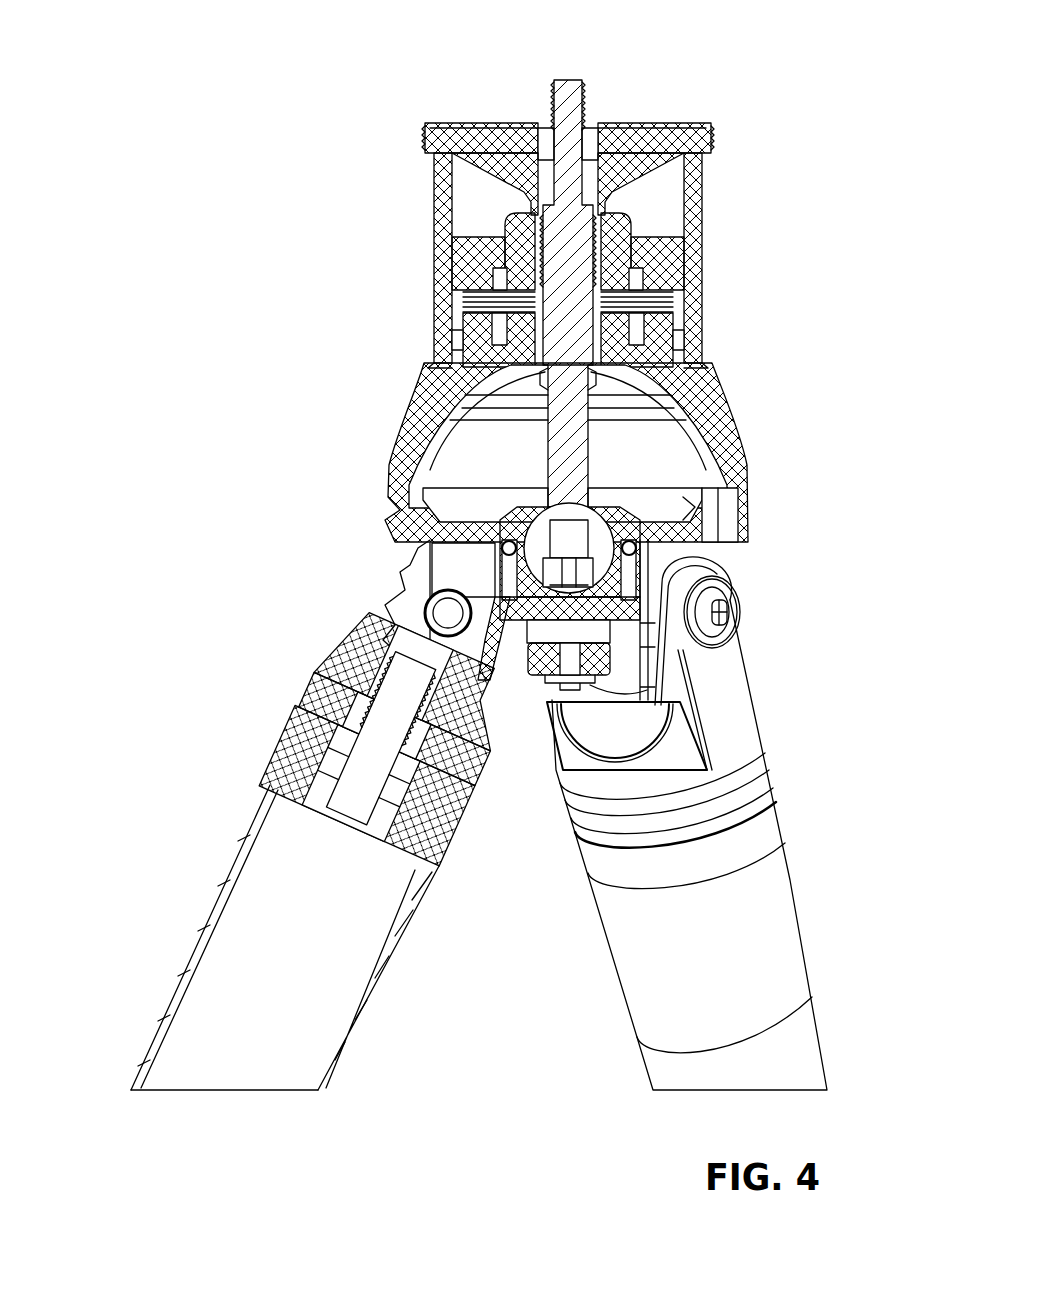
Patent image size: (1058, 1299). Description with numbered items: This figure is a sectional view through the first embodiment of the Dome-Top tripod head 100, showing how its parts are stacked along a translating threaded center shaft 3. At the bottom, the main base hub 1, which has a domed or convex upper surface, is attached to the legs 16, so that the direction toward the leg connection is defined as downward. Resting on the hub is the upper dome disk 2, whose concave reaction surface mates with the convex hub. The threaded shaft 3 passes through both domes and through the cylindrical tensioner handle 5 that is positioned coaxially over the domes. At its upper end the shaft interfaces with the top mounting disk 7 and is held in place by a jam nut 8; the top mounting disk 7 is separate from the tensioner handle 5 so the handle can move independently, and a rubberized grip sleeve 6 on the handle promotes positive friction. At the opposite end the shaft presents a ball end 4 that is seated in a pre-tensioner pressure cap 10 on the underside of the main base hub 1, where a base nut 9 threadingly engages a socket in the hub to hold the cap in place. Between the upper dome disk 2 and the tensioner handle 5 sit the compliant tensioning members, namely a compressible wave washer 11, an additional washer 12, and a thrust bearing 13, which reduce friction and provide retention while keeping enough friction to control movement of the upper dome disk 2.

The first exemplary embodiment of the tripod head 100 is at (133, 77).
The main base hub 1 is at (752, 497).
The upper dome disk 2 is at (717, 403).
The threaded shaft 3 is at (556, 80).
The ball end of center shaft 4 is at (633, 543).
The tensioner handle 5 is at (665, 235).
The rubberized grip sleeve 6 is at (436, 192).
The top mounting disk 7 is at (676, 125).
The jam nut 8 is at (549, 128).
The base nut 9 is at (612, 653).
The pressure cap 10 is at (582, 598).
The wave washer 11 is at (462, 310).
The washer 12 is at (679, 304).
The thrust bearing 13 is at (677, 298).
The legs 16 is at (292, 732).